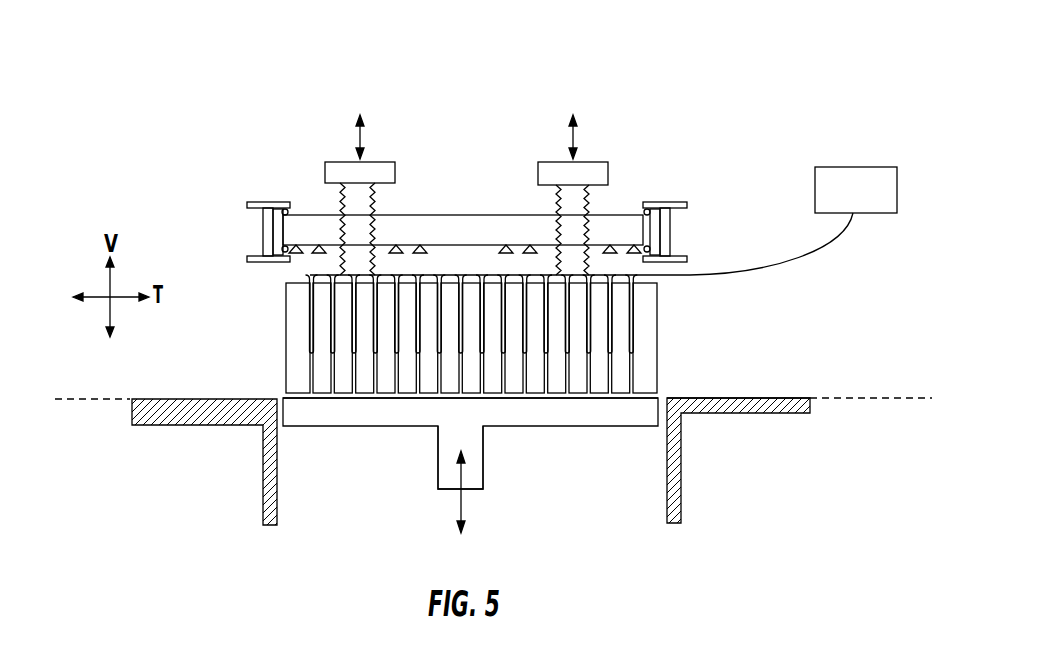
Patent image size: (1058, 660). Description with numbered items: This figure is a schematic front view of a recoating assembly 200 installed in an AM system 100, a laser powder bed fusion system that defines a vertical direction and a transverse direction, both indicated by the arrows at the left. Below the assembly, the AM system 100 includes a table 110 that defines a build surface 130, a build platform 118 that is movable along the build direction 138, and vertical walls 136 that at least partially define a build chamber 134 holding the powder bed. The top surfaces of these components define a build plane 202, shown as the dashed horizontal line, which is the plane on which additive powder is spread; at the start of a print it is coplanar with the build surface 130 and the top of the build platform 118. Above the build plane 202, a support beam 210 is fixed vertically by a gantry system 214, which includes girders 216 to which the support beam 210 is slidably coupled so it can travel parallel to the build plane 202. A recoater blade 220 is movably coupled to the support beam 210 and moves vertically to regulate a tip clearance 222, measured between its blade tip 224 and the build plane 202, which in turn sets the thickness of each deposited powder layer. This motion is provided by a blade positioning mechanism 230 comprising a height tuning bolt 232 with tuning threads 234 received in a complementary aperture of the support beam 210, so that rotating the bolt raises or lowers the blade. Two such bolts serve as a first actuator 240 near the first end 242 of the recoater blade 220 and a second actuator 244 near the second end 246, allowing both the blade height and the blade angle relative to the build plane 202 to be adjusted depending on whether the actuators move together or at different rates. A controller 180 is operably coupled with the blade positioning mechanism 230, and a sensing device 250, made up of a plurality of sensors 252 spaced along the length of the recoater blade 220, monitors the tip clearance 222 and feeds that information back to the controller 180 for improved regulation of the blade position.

The AM system 100 is at (810, 128).
The table 110 is at (750, 410).
The build platform 118 is at (507, 419).
The build surface 130 is at (737, 397).
The build chamber 134 is at (397, 508).
The vertical walls 136 is at (270, 478).
The build direction 138 is at (463, 500).
The controller 180 is at (872, 204).
The recoating assembly 200 is at (641, 112).
The build plane 202 is at (80, 400).
The support beam 210 is at (502, 224).
The gantry system 214 is at (251, 199).
The girders 216 is at (268, 228).
The recoater blade 220 is at (291, 343).
The tip clearance 222 is at (283, 398).
The blade tip 224 is at (386, 401).
The blade positioning mechanism 230 is at (381, 161).
The height tuning bolt 232 is at (358, 218).
The tuning threads 234 is at (374, 228).
The first actuator 240 is at (323, 172).
The first end 242 is at (281, 196).
The second actuator 244 is at (592, 159).
The second end 246 is at (663, 190).
The sensing device 250 is at (642, 362).
The sensors 252 is at (628, 278).